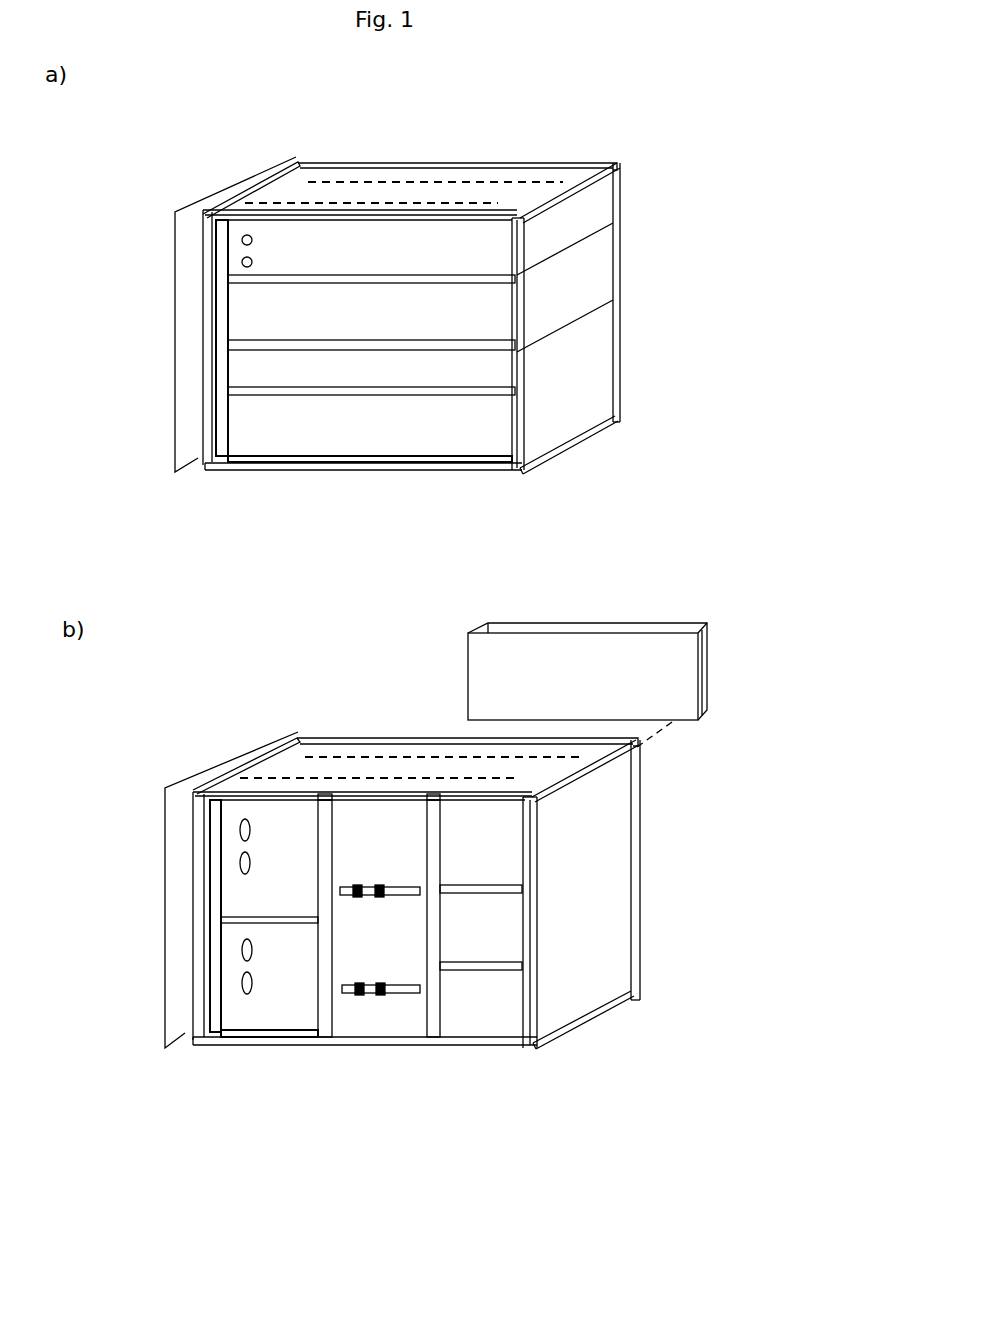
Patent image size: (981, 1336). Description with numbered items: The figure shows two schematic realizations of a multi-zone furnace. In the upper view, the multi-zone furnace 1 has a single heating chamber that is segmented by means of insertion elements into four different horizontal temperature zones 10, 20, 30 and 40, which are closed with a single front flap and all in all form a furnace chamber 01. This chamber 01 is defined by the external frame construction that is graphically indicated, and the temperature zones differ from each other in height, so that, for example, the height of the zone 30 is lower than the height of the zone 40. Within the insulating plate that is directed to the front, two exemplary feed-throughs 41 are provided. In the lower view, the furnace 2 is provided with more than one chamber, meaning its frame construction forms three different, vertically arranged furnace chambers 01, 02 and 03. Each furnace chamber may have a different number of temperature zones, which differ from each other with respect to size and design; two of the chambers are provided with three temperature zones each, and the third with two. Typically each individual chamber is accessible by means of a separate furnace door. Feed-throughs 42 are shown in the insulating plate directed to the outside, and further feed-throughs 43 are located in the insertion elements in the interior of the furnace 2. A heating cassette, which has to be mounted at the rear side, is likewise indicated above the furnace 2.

The multi-zone furnace 1 is at (411, 572).
The temperature zone 10 is at (460, 245).
The temperature zone 20 is at (495, 308).
The temperature zone 30 is at (495, 362).
The temperature zone 40 is at (495, 427).
The feed-throughs 41 is at (242, 238).
The furnace chamber 01 is at (375, 245).
The multi-zone furnace 2 is at (438, 883).
The furnace chamber 02 is at (395, 1013).
The furnace chamber 03 is at (470, 852).
The feed-throughs 42 is at (238, 830).
The feed-throughs 43 is at (375, 995).